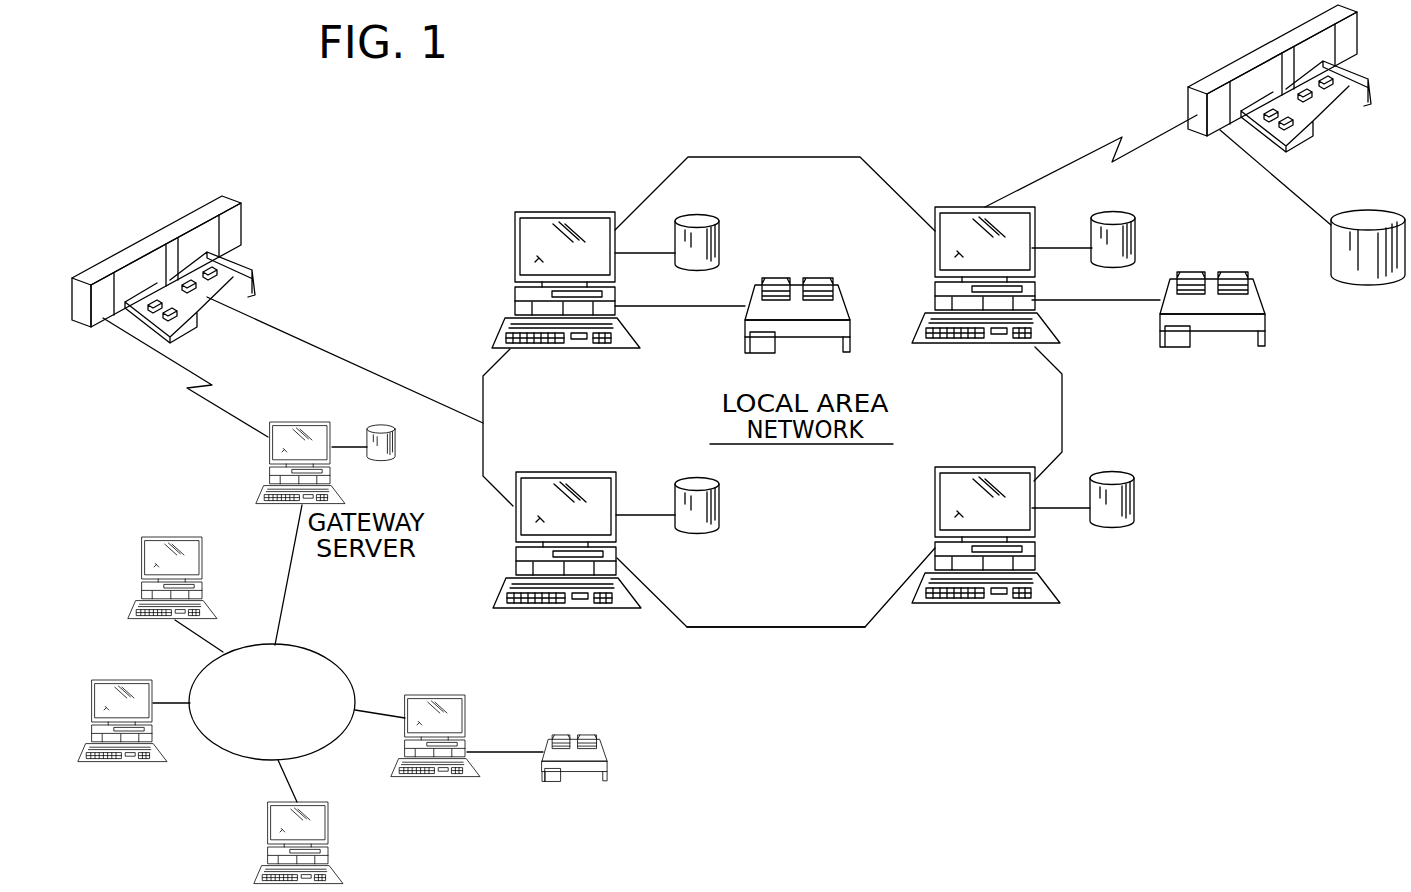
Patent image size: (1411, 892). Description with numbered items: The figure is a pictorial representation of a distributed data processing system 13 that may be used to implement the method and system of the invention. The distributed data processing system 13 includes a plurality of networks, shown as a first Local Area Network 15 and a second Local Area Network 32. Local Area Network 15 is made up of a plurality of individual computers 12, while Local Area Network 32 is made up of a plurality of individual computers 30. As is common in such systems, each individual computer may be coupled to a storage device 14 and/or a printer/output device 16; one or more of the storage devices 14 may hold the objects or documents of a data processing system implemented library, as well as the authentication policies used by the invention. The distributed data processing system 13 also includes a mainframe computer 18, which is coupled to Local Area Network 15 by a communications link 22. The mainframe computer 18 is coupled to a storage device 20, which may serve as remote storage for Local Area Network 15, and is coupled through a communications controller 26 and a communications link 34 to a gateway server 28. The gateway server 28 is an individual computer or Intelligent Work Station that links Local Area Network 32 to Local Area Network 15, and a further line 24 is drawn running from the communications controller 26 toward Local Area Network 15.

The individual computers 12 is at (560, 210).
The distributed data processing system 13 is at (796, 150).
The storage device 14 is at (721, 230).
The Local Area Network 15 is at (815, 627).
The printer/output device 16 is at (797, 279).
The mainframe computer 18 is at (1233, 65).
The storage device 20 is at (1384, 212).
The communications link 22 is at (1148, 120).
The communications link 24 is at (324, 348).
The communications controller 26 is at (246, 212).
The gateway server 28 is at (297, 422).
The individual computers 30 is at (172, 537).
The Local Area Network 32 is at (346, 668).
The communications link 34 is at (207, 407).